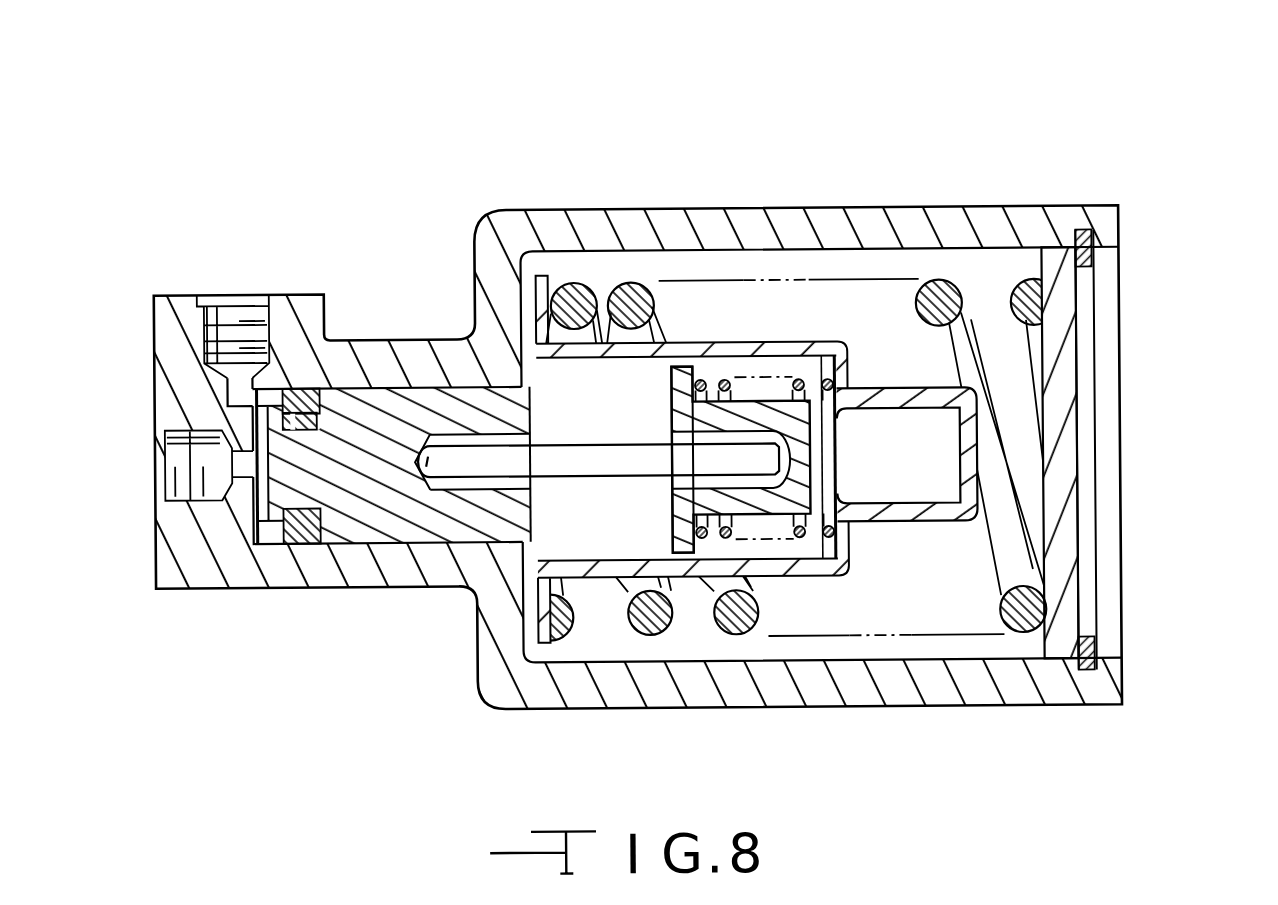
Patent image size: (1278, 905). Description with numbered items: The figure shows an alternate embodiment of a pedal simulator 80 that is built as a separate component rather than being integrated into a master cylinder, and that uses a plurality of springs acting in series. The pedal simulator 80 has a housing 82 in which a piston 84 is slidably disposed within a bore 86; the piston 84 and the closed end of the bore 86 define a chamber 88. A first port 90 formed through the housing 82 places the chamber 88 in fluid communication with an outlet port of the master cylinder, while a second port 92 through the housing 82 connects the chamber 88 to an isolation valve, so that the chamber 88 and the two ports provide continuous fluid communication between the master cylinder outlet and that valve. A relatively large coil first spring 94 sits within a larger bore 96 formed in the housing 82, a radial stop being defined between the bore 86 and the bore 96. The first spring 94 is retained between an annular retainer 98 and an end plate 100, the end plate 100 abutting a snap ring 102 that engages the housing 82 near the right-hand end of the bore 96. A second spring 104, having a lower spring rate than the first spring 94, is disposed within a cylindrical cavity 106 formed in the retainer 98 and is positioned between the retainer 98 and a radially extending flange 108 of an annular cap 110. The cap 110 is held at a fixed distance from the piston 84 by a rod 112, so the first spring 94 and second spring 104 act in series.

The pedal simulator 80 is at (651, 363).
The housing 82 is at (385, 356).
The piston 84 is at (354, 534).
The bore 86 is at (418, 532).
The chamber 88 is at (280, 533).
The first port 90 is at (263, 320).
The second port 92 is at (170, 485).
The first spring 94 is at (574, 302).
The bore 96 is at (676, 262).
The annular retainer 98 is at (858, 354).
The end plate 100 is at (1103, 342).
The snap ring 102 is at (1093, 263).
The second spring 104 is at (812, 579).
The cylindrical cavity 106 is at (644, 562).
The radially extending flange 108 is at (672, 388).
The annular cap 110 is at (691, 460).
The rod 112 is at (573, 478).